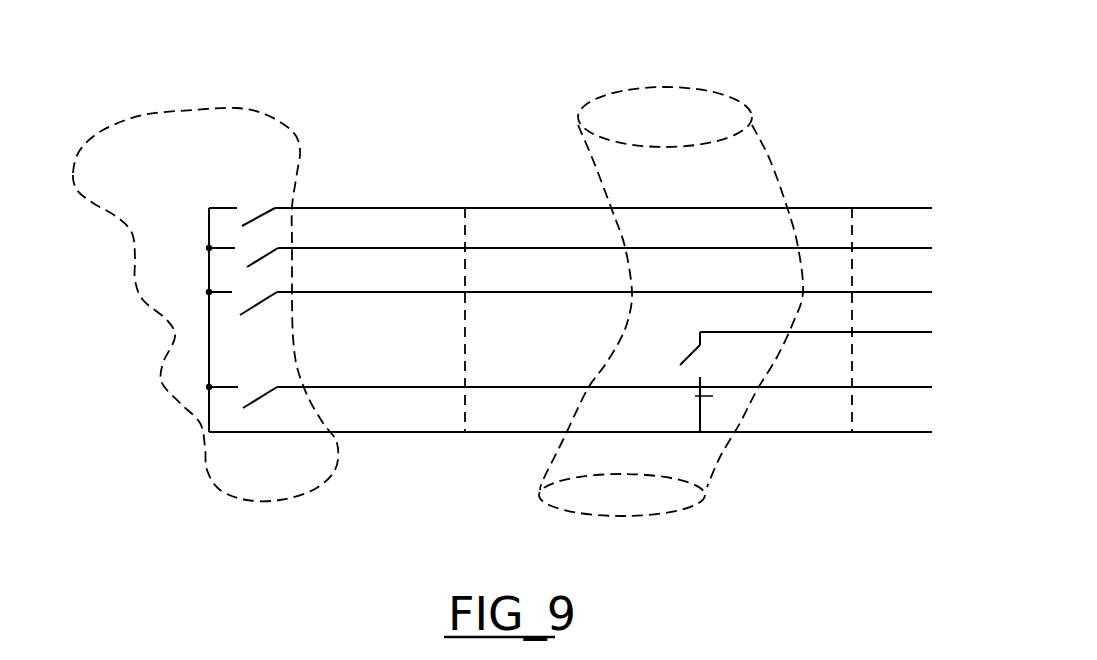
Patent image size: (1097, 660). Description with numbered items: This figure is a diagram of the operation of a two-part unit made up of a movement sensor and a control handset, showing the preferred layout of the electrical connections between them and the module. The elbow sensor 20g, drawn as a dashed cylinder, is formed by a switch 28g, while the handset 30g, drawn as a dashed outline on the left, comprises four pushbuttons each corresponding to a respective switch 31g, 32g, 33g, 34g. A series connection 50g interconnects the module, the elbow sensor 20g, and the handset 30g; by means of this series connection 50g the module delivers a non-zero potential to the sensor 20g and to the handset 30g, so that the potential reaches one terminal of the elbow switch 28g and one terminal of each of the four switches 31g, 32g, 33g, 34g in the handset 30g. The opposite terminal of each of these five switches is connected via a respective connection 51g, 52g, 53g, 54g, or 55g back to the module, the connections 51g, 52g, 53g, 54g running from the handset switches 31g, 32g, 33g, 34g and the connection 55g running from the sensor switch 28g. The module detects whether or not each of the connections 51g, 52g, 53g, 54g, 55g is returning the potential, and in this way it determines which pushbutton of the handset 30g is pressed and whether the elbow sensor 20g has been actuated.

The elbow sensor 20g is at (745, 172).
The switch 28g is at (702, 377).
The control handset 30g is at (273, 140).
The switch 31g is at (213, 207).
The switch 32g is at (220, 252).
The switch 33g is at (228, 292).
The switch 34g is at (228, 388).
The series connection 50g is at (805, 433).
The connection 51g is at (377, 207).
The connection 52g is at (365, 249).
The connection 53g is at (388, 293).
The connection 54g is at (377, 388).
The connection 55g is at (795, 333).